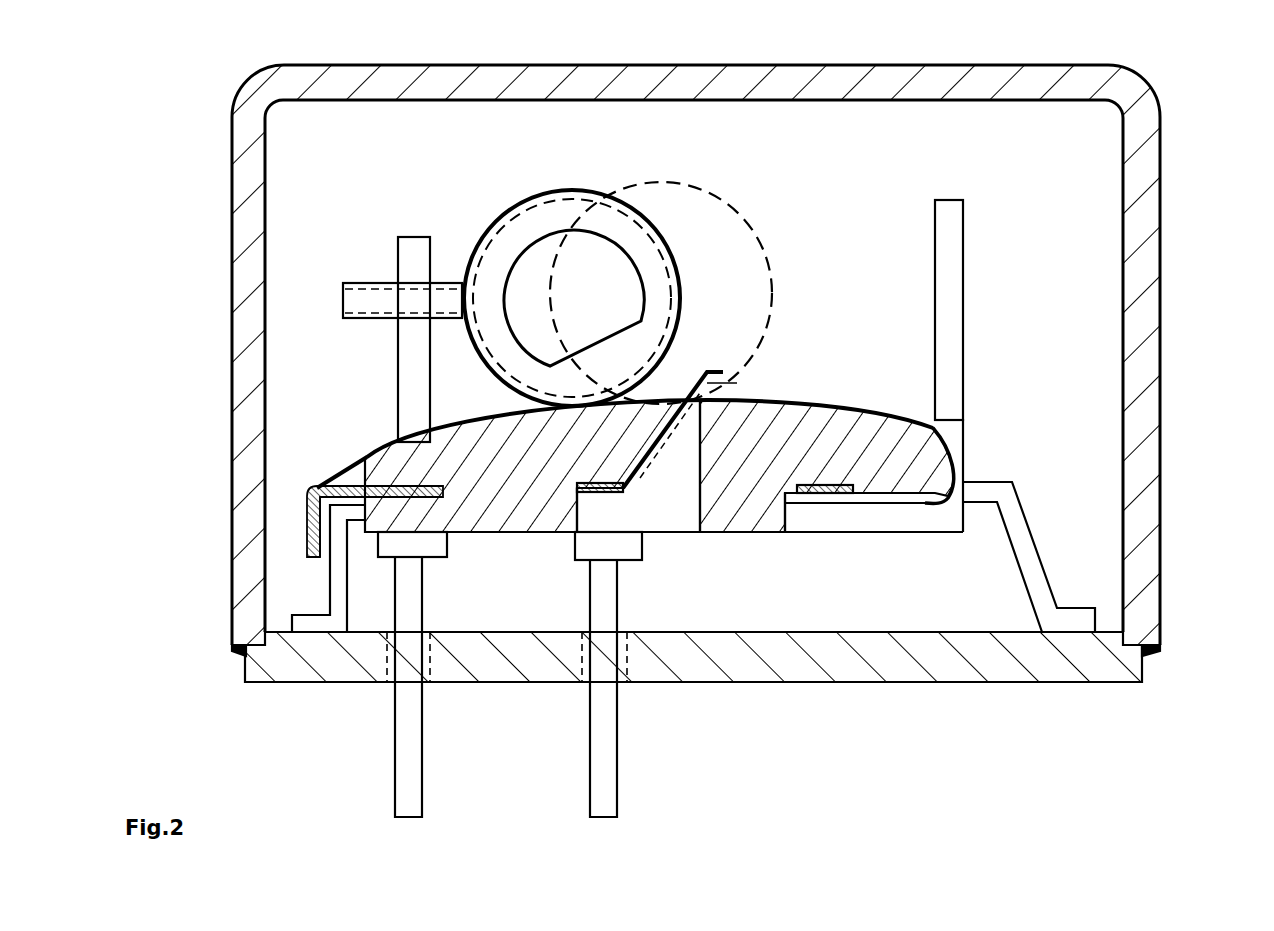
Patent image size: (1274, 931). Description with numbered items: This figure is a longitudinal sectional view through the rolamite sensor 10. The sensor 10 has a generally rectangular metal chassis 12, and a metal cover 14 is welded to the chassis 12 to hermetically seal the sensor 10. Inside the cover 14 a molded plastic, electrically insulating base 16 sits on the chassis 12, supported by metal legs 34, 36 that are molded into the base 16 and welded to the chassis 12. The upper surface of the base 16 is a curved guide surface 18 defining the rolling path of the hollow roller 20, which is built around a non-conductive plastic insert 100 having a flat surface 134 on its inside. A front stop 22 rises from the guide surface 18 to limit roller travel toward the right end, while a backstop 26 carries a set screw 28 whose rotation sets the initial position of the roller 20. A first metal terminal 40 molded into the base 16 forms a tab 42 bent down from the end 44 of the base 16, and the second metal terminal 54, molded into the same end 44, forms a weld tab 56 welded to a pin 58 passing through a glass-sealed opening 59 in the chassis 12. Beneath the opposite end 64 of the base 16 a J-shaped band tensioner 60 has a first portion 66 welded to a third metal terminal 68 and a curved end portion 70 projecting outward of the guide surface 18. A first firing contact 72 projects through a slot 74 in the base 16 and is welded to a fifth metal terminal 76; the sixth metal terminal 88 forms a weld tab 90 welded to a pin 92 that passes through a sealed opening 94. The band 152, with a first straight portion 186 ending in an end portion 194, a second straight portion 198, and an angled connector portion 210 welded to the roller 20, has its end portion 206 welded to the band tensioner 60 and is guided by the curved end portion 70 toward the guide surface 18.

The rolamite sensor 10 is at (1178, 88).
The metal chassis 12 is at (950, 682).
The metal cover 14 is at (1120, 372).
The base 16 is at (696, 456).
The curved guide surface 18 is at (848, 403).
The roller 20 is at (592, 186).
The front stop 22 is at (953, 218).
The backstop 26 is at (393, 375).
The set screw 28 is at (340, 305).
The metal leg 34 is at (1025, 543).
The metal leg 36 is at (315, 623).
The first metal terminal 40 is at (428, 480).
The tab 42 is at (310, 552).
The end of the base 44 is at (323, 485).
The second metal terminal 54 is at (383, 562).
The weld tab 56 is at (425, 547).
The pin 58 is at (407, 732).
The opening 59 is at (388, 682).
The band tensioner 60 is at (855, 504).
The opposite end of the base 64 is at (943, 468).
The first portion 66 is at (833, 503).
The third metal terminal 68 is at (813, 500).
The curved end portion 70 is at (950, 527).
The first firing contact 72 is at (712, 366).
The slot 74 is at (660, 507).
The fifth metal terminal 76 is at (545, 533).
The sixth metal terminal 88 is at (633, 562).
The weld tab 90 is at (585, 543).
The pin 92 is at (603, 745).
The opening 94 is at (620, 682).
The plastic insert 100 is at (646, 263).
The flat surface 134 is at (595, 348).
The band 152 is at (784, 396).
The first straight portion 186 is at (657, 228).
The end portion 194 is at (310, 523).
The second straight portion 198 is at (790, 398).
The end portion 206 is at (920, 503).
The connector portion 210 is at (507, 208).